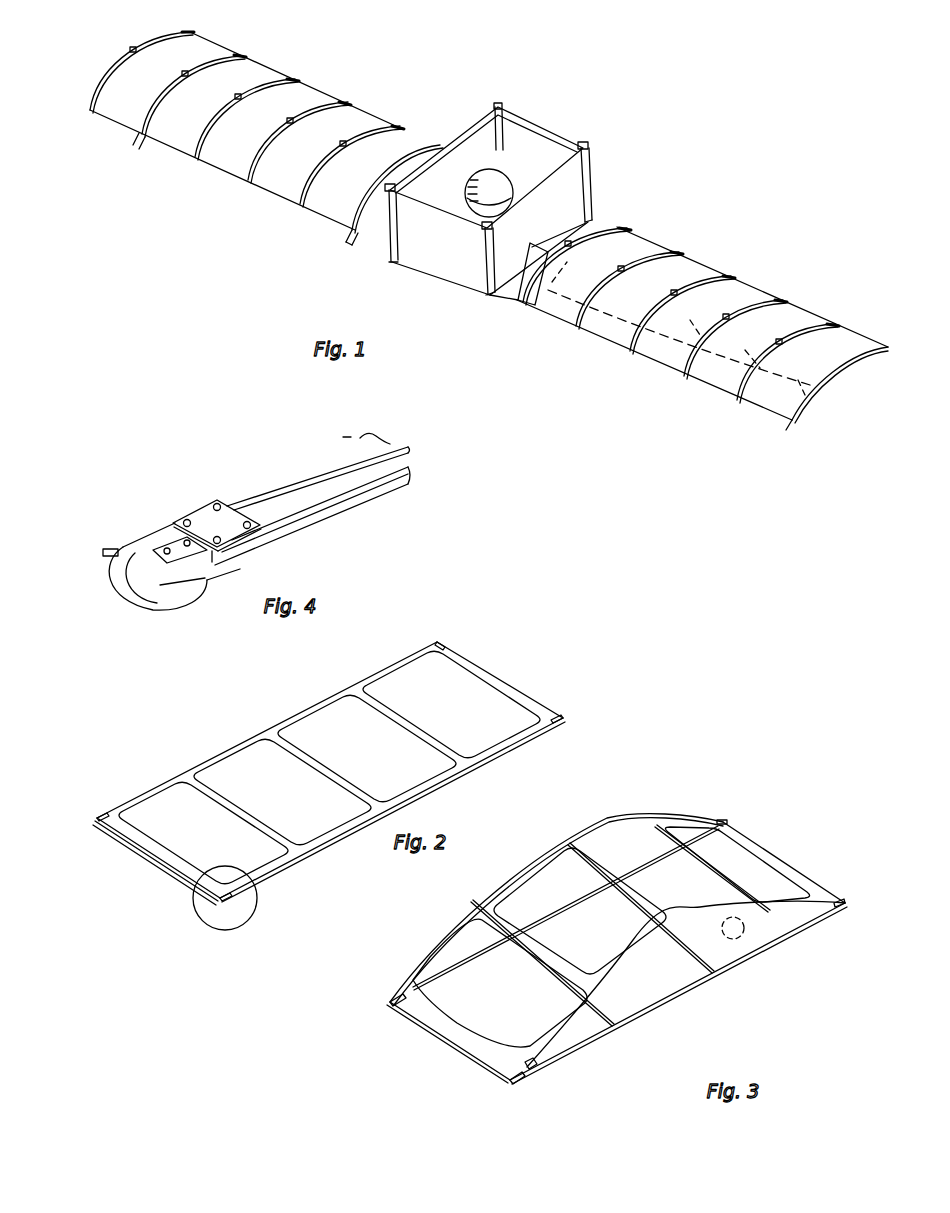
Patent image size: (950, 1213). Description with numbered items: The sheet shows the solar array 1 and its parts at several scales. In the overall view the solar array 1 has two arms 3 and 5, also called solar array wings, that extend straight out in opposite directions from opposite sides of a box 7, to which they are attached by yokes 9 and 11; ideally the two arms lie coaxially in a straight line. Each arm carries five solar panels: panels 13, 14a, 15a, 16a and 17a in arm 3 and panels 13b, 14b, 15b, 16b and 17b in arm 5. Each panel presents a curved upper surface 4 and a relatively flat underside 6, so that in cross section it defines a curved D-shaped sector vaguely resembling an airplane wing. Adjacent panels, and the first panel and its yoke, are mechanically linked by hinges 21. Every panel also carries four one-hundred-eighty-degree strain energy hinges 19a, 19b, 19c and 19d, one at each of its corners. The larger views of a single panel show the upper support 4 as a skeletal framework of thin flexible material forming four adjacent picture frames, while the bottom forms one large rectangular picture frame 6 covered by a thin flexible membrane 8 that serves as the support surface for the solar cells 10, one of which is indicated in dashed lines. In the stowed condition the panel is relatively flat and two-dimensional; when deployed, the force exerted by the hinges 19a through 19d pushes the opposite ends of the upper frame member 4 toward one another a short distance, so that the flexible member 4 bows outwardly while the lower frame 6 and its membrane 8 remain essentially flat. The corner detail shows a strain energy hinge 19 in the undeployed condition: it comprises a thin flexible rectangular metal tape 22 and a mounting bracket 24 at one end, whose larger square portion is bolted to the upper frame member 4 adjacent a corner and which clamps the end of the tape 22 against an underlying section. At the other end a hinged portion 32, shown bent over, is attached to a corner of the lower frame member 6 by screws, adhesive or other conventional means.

In FIG. 1, the solar array 1 is at (420, 116).
In FIG. 1, the arm 3 is at (279, 51).
In FIG. 1, the curved upper surface 4 is at (344, 88).
In FIG. 4, the curved upper surface 4 is at (397, 435).
In FIG. 2, the curved upper surface 4 is at (383, 650).
In FIG. 3, the curved upper surface 4 is at (604, 809).
In FIG. 1, the arm 5 is at (581, 343).
In FIG. 1, the flat bottom surface 6 is at (303, 90).
In FIG. 4, the flat bottom surface 6 is at (405, 495).
In FIG. 2, the flat bottom surface 6 is at (307, 878).
In FIG. 3, the flat bottom surface 6 is at (612, 1046).
In FIG. 1, the box 7 is at (426, 297).
In FIG. 2, the thin flexible membrane 8 is at (506, 690).
In FIG. 3, the thin flexible membrane 8 is at (636, 1006).
In FIG. 1, the yoke 9 is at (370, 247).
In FIG. 3, the solar cell 10 is at (746, 949).
In FIG. 1, the yoke 11 is at (502, 301).
In FIG. 1, the solar panel 13 is at (317, 228).
In FIG. 1, the solar panel 13b is at (547, 328).
In FIG. 1, the solar panel 14a is at (264, 204).
In FIG. 1, the solar panel 14b is at (606, 354).
In FIG. 1, the solar panel 15a is at (221, 184).
In FIG. 2, the solar panel 15a is at (172, 759).
In FIG. 3, the solar panel 15a is at (455, 905).
In FIG. 1, the solar panel 15b is at (652, 375).
In FIG. 1, the solar panel 16a is at (157, 156).
In FIG. 1, the solar panel 16b is at (704, 399).
In FIG. 1, the solar panel 17a is at (106, 134).
In FIG. 1, the solar panel 17b is at (757, 420).
In FIG. 1, the strain energy hinge 19 is at (180, 170).
In FIG. 4, the strain energy hinge 19 is at (139, 520).
In FIG. 2, the strain energy hinge 19a is at (85, 806).
In FIG. 3, the strain energy hinge 19a is at (373, 1009).
In FIG. 2, the strain energy hinge 19b is at (211, 913).
In FIG. 3, the strain energy hinge 19b is at (516, 1097).
In FIG. 2, the strain energy hinge 19c is at (443, 630).
In FIG. 3, the strain energy hinge 19c is at (730, 810).
In FIG. 2, the strain energy hinge 19d is at (577, 713).
In FIG. 3, the strain energy hinge 19d is at (854, 891).
In FIG. 1, the hinge 21 is at (370, 92).
In FIG. 4, the metal tape 22 is at (95, 576).
In FIG. 4, the mounting bracket 24 is at (196, 491).
In FIG. 4, the hinged portion 32 is at (198, 596).